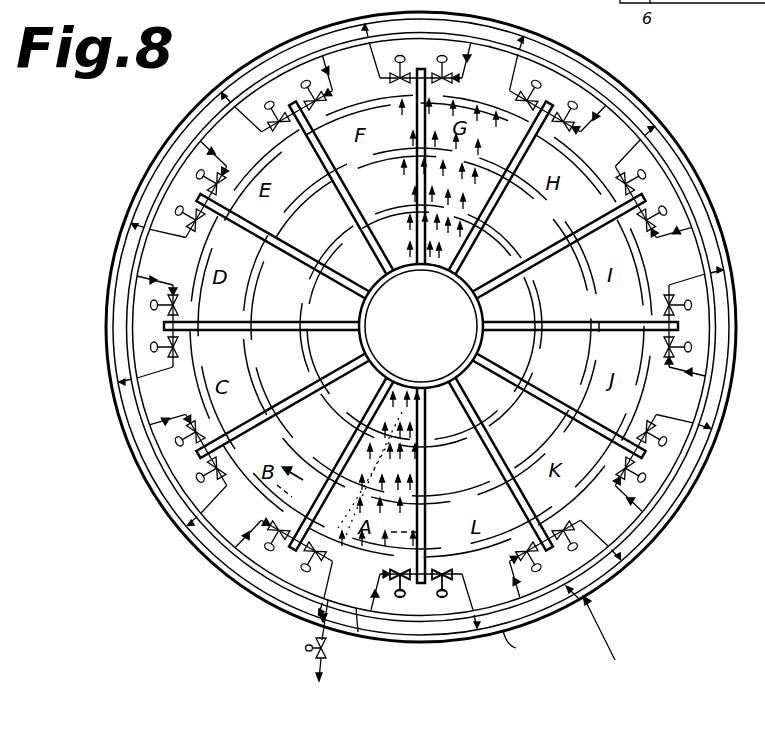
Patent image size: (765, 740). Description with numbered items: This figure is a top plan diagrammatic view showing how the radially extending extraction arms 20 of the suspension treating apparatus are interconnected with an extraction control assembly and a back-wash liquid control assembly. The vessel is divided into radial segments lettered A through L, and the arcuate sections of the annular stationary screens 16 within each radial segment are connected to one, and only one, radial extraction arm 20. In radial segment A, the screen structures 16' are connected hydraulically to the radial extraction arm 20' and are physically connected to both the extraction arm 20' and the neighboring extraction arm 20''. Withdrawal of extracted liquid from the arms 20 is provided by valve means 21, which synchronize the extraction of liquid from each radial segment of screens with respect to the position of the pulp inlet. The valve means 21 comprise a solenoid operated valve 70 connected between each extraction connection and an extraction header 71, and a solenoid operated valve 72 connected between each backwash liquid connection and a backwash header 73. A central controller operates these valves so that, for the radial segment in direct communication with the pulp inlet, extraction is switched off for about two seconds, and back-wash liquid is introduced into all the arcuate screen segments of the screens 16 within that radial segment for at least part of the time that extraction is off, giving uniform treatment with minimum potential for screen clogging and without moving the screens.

The annular stationary screens 16 is at (421, 326).
The screen structures in radial segment A 16' is at (366, 470).
The radially extending extraction arms 20 is at (421, 326).
The radial extraction arm 20' is at (296, 498).
The extraction arm 20'' is at (418, 529).
The valve means 21 is at (187, 610).
The solenoid operated valve 70 is at (446, 594).
The extraction header 71 is at (521, 645).
The solenoid operated valve 72 is at (402, 594).
The backwash header 73 is at (336, 640).